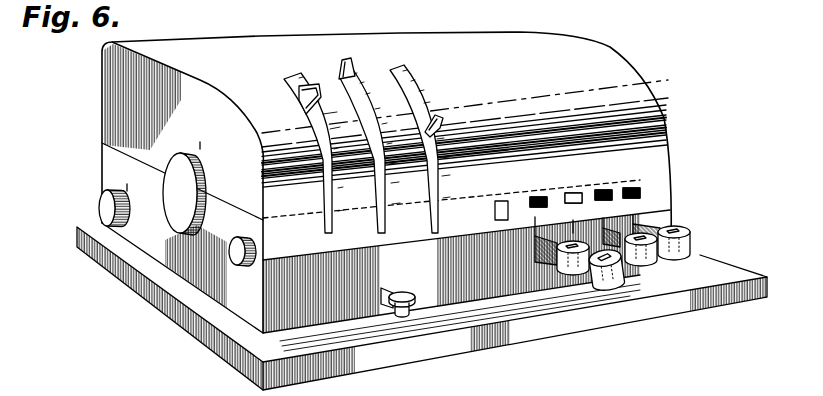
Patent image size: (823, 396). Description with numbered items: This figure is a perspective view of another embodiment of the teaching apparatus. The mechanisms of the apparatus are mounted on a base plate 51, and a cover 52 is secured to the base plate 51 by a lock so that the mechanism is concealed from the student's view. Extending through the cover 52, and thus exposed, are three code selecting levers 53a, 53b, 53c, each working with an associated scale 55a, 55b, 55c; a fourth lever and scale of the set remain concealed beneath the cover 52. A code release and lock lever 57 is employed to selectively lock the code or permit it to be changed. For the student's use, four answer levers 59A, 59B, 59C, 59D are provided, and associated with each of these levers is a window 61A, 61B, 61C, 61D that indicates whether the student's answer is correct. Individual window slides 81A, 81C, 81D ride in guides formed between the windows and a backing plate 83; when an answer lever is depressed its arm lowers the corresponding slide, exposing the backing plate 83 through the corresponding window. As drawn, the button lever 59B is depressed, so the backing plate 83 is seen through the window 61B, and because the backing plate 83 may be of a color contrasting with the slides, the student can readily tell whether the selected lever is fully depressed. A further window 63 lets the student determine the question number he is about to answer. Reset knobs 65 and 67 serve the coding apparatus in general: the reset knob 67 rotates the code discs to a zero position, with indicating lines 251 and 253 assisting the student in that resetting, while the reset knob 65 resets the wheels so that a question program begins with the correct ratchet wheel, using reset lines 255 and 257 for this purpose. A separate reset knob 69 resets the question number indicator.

The base plate 51 is at (187, 331).
The cover 52 is at (665, 112).
The code selecting lever 53a is at (300, 92).
The code selecting lever 53b is at (342, 61).
The code selecting lever 53c is at (441, 118).
The scale 55a is at (350, 216).
The scale 55b is at (406, 210).
The scale 55c is at (455, 206).
The code release and lock lever 57 is at (406, 295).
The answer lever 59A is at (572, 278).
The answer lever 59B is at (607, 292).
The answer lever 59C is at (637, 270).
The answer lever 59D is at (692, 240).
The window 61A is at (538, 197).
The window 61B is at (572, 193).
The window 61C is at (603, 190).
The window 61D is at (632, 188).
The window 63 is at (495, 207).
The reset knob 65 is at (100, 194).
The reset knob 67 is at (203, 186).
The reset knob 69 is at (236, 267).
The window slide 81A is at (538, 207).
The window slide 81C is at (603, 200).
The window slide 81D is at (632, 198).
The backing plate 83 is at (572, 203).
The indicating line 251 is at (178, 172).
The indicating line 253 is at (201, 146).
The reset line 255 is at (107, 213).
The reset line 257 is at (126, 187).